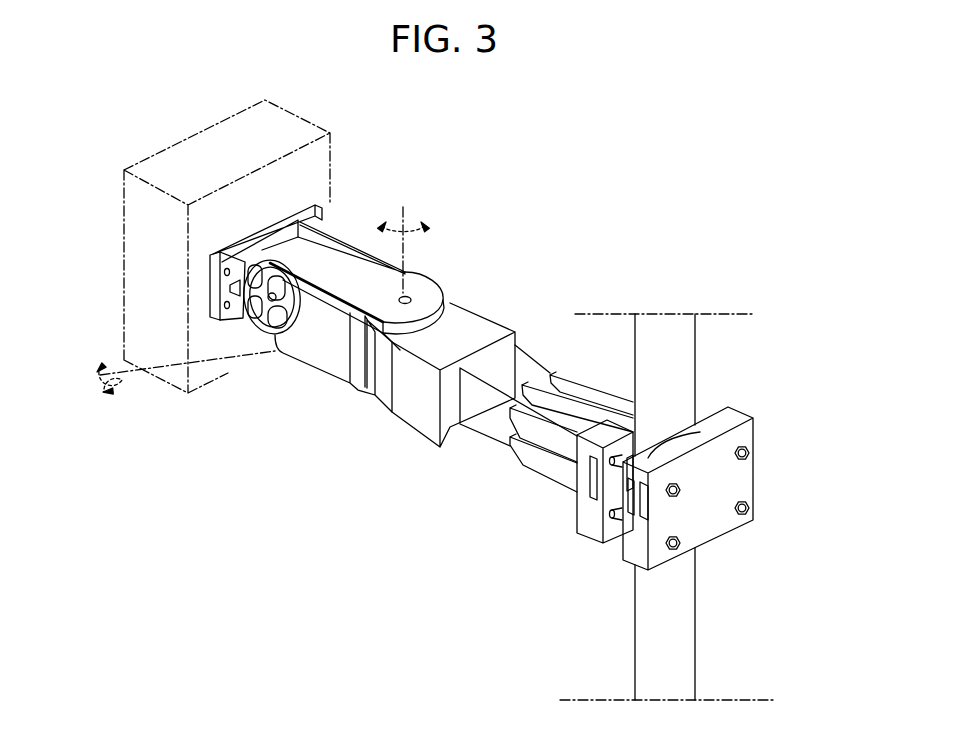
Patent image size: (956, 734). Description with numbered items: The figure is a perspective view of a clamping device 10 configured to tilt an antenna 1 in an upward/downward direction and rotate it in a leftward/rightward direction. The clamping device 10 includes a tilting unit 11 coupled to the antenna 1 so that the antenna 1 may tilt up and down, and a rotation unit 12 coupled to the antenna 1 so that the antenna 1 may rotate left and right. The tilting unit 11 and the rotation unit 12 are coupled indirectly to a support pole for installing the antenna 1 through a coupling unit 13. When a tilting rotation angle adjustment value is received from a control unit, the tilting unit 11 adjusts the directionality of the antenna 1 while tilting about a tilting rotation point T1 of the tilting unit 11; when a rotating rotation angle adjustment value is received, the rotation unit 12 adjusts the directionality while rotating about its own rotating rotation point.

The antenna 1 is at (221, 154).
The clamping device 10 is at (491, 431).
The tilting unit 11 is at (345, 205).
The rotation unit 12 is at (487, 225).
The coupling unit 13 is at (518, 300).
The tilting rotation point T1 is at (186, 390).